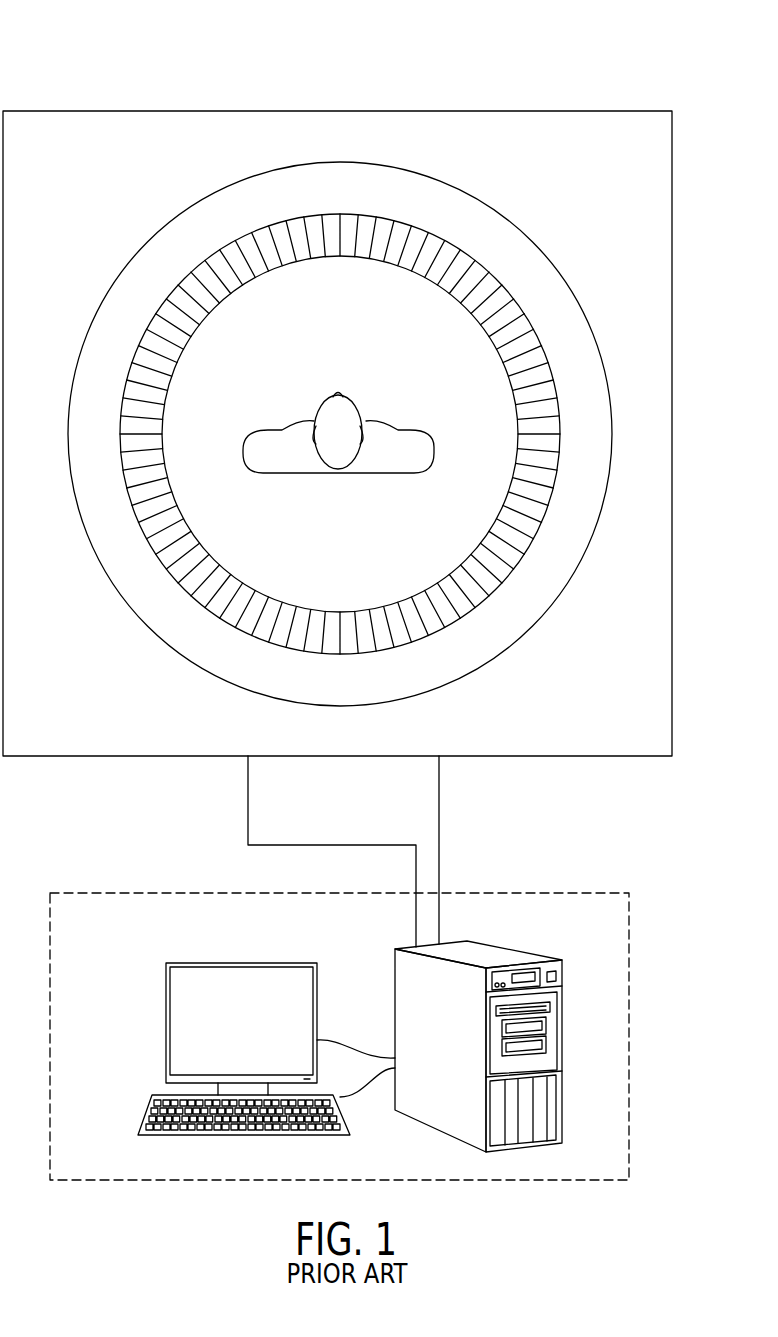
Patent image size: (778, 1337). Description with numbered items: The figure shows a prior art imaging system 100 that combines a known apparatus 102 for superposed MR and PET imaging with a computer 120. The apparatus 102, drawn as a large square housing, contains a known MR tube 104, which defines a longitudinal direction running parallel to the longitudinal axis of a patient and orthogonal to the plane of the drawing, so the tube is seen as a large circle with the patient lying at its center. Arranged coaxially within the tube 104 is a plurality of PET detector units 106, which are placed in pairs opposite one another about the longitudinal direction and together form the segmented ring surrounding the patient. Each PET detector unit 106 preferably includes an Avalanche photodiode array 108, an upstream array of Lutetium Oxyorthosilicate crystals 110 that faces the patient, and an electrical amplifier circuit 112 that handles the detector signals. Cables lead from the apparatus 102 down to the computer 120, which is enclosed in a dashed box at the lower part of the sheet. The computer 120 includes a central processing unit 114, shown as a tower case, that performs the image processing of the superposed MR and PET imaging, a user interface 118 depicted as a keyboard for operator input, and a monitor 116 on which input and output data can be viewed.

The system 100 is at (104, 52).
The apparatus 102 is at (467, 110).
The MR tube 104 is at (592, 331).
The PET detector units 106 is at (329, 607).
The Avalanche photodiode array 108 is at (345, 237).
The array of Lutetium Oxyorthosilicate crystals 110 is at (523, 442).
The electrical amplifier circuit 112 is at (192, 287).
The central processing unit 114 is at (395, 992).
The monitor 116 is at (240, 963).
The user interface 118 is at (140, 1115).
The computer 120 is at (612, 929).